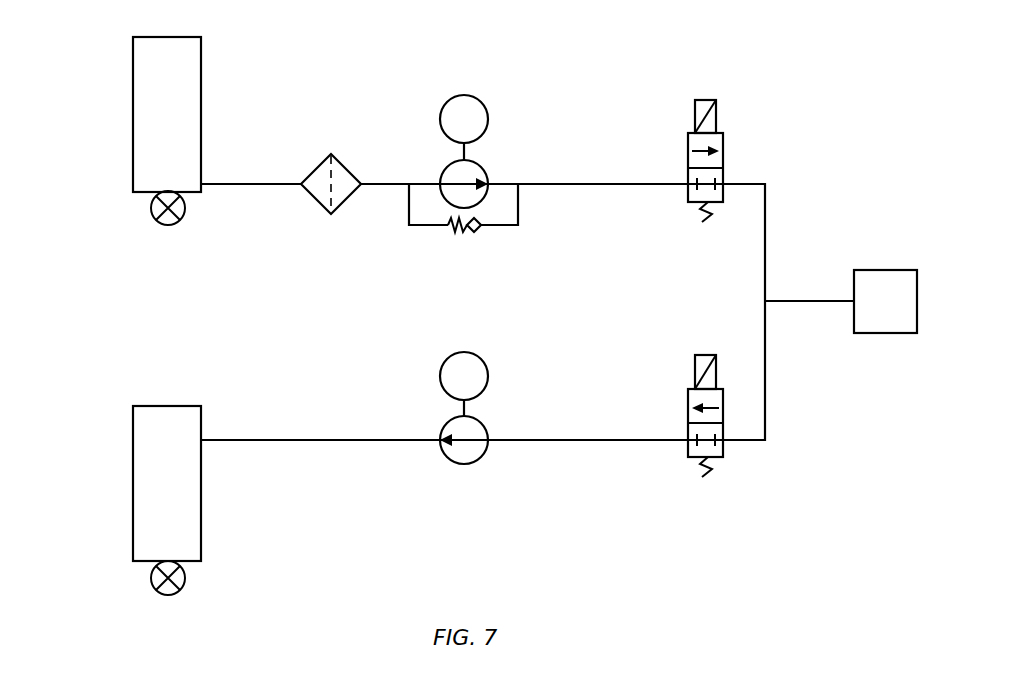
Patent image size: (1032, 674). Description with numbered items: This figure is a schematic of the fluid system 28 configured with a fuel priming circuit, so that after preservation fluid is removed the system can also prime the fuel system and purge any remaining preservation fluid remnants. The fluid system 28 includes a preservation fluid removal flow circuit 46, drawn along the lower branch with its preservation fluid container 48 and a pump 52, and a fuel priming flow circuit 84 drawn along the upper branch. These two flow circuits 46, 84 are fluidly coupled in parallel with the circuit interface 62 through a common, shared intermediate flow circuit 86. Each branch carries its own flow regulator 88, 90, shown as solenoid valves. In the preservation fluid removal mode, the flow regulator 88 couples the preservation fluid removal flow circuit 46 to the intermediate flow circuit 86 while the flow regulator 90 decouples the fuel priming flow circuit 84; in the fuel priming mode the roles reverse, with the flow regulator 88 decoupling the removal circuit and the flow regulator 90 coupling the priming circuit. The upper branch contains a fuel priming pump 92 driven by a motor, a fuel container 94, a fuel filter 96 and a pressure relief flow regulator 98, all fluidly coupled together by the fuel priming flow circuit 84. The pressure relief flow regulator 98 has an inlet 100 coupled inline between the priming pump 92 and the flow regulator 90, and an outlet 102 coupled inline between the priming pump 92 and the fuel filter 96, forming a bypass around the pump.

The fluid system 28 is at (797, 85).
The preservation fluid removal flow circuit 46 is at (318, 489).
The preservation fluid container 48 is at (128, 480).
The pump 52 is at (473, 469).
The circuit interface 62 is at (899, 314).
The fuel priming flow circuit 84 is at (588, 152).
The intermediate flow circuit 86 is at (812, 297).
The flow regulator 88 is at (722, 466).
The flow regulator 90 is at (728, 160).
The fuel priming pump 92 is at (486, 161).
The fuel container 94 is at (128, 113).
The fuel filter 96 is at (346, 165).
The pressure relief flow regulator 98 is at (466, 246).
The inlet 100 is at (521, 188).
The outlet 102 is at (400, 187).